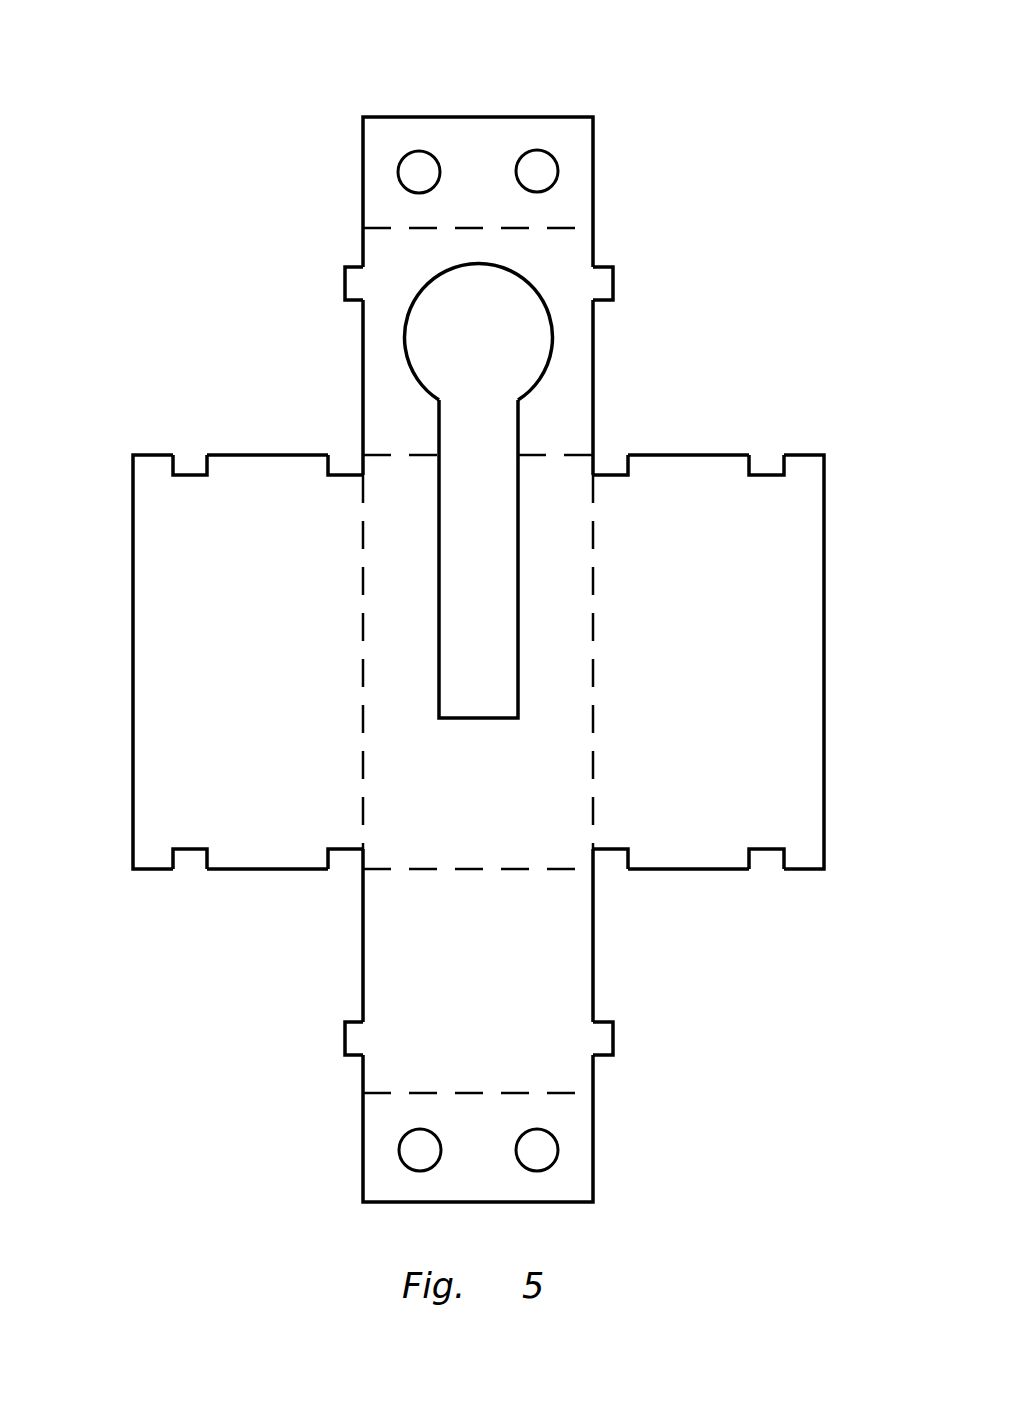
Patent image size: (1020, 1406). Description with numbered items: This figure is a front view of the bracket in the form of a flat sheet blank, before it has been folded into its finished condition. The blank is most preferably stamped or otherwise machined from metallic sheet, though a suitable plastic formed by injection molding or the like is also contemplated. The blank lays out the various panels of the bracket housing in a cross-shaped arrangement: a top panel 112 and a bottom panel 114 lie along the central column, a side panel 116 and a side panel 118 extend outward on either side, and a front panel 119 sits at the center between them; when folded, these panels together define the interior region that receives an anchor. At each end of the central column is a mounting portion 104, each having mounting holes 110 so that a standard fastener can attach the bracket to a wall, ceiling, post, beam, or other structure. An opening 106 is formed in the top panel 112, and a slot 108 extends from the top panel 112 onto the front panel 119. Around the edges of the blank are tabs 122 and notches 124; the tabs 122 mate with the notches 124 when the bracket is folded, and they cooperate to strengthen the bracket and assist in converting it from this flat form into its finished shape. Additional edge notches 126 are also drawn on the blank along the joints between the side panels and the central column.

The mounting portions 104 is at (508, 207).
The opening 106 is at (558, 338).
The slot 108 is at (435, 597).
The mounting holes 110 is at (430, 150).
The top panel 112 is at (588, 269).
The bottom panel 114 is at (515, 947).
The side panel 116 is at (740, 685).
The side panel 118 is at (295, 690).
The front panel 119 is at (513, 808).
The tabs 122 is at (343, 282).
The notches 124 is at (190, 468).
The inner notches 126 is at (347, 468).